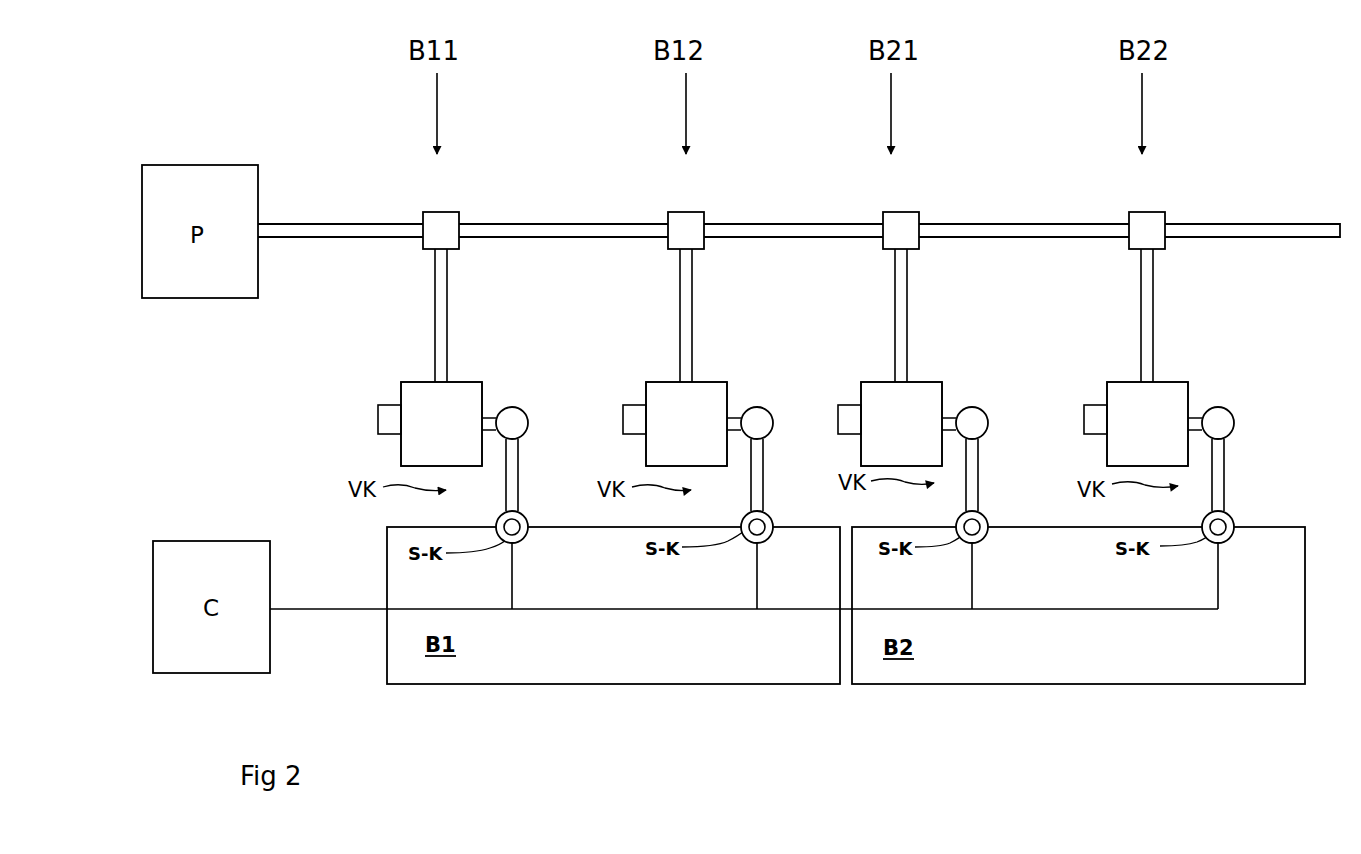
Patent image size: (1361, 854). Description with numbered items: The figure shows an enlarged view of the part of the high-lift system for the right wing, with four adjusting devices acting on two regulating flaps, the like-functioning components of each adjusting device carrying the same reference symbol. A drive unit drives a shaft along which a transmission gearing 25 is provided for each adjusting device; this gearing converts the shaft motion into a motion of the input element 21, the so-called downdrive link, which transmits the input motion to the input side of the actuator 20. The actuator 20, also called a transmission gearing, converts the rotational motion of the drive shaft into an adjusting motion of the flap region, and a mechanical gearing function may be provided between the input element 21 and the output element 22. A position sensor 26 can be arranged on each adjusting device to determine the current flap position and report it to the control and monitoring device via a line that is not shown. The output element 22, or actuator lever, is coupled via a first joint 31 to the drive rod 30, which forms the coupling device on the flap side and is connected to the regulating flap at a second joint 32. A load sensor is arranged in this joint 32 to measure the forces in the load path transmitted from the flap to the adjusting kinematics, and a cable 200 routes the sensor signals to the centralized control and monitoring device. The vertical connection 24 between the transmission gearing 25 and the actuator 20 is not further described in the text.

The actuator 20 is at (794, 424).
The input element 21 is at (426, 370).
The output element 22 is at (489, 416).
The supply line 24 is at (435, 268).
The transmission gearing 25 is at (794, 230).
The position sensor 26 is at (390, 420).
The drive rod 30 is at (514, 462).
The first joint 31 is at (524, 412).
The joint 32 is at (497, 517).
The cable 200 is at (514, 572).